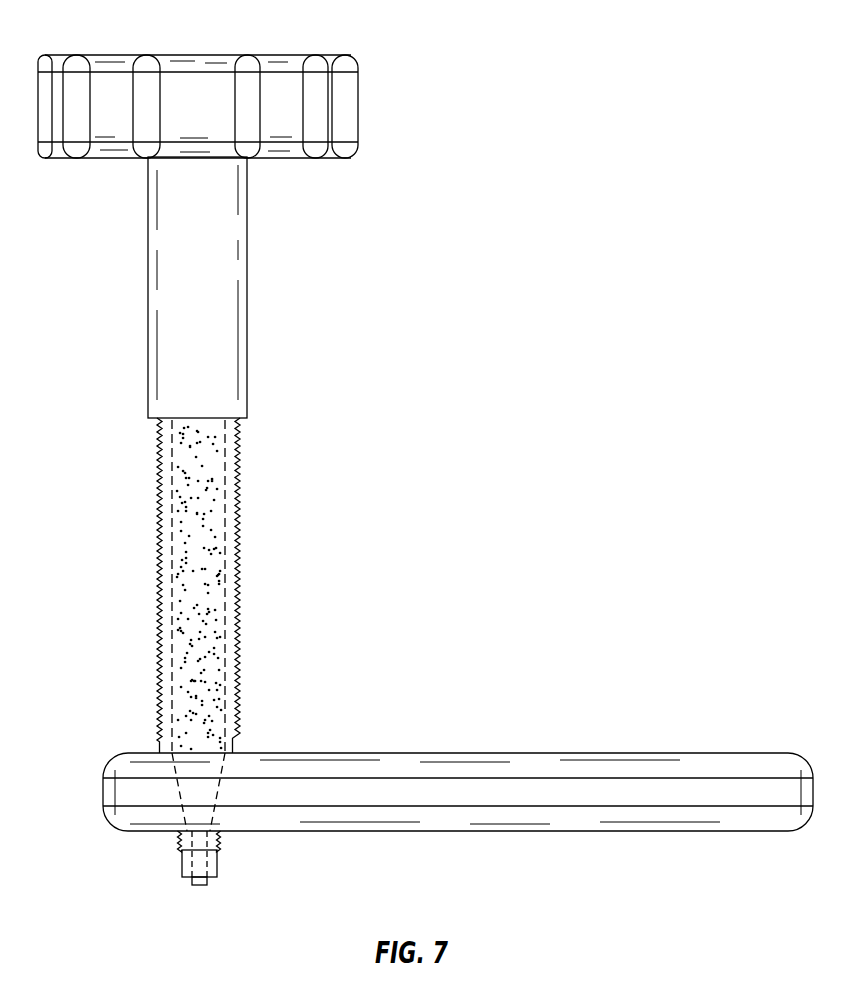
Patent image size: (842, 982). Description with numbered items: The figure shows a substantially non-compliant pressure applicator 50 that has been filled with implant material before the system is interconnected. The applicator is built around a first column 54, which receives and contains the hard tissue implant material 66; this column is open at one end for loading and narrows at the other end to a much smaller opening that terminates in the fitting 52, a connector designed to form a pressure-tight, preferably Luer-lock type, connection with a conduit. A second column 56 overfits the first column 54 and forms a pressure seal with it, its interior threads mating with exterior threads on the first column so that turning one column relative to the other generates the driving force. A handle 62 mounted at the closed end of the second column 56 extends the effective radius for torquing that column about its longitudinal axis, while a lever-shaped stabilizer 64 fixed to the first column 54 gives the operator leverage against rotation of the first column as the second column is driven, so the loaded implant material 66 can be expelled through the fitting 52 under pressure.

The pressure applicator 50 is at (309, 480).
The fitting 52 is at (229, 866).
The first column 54 is at (166, 585).
The second column 56 is at (229, 287).
The handle 62 is at (198, 86).
The stabilizer 64 is at (458, 772).
The hard tissue implant material 66 is at (233, 588).